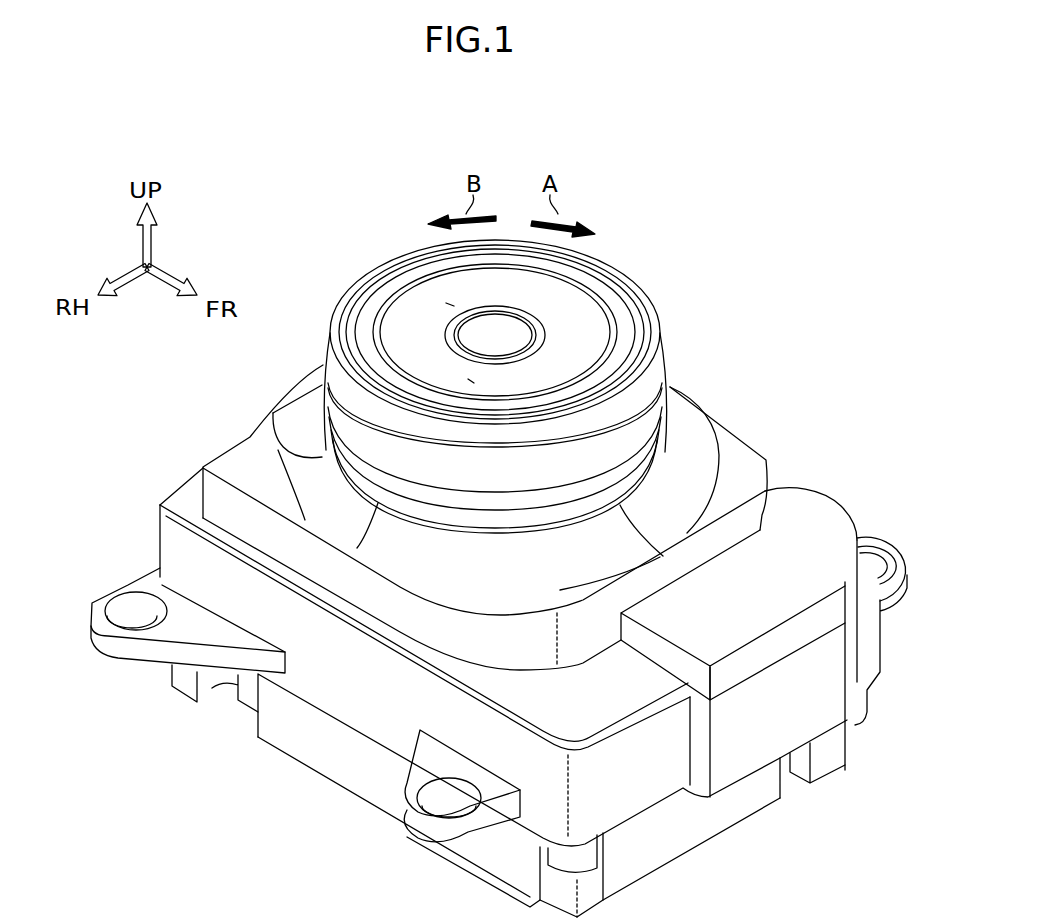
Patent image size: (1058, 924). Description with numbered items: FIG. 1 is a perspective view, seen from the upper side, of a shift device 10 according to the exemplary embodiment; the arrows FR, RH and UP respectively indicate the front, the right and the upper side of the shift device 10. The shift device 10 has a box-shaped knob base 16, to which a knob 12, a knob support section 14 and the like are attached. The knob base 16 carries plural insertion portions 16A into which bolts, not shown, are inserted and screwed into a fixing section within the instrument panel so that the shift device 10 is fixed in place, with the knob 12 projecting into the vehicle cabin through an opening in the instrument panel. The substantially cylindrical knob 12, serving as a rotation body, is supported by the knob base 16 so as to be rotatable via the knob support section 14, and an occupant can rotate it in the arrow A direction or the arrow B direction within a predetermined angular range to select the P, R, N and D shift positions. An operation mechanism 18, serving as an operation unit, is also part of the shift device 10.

The shift device 10 is at (734, 319).
The knob 12 is at (698, 363).
The knob support section 14 is at (549, 297).
The knob base 16 is at (368, 692).
The insertion portions 16A is at (108, 643).
The operation mechanism 18 is at (722, 620).